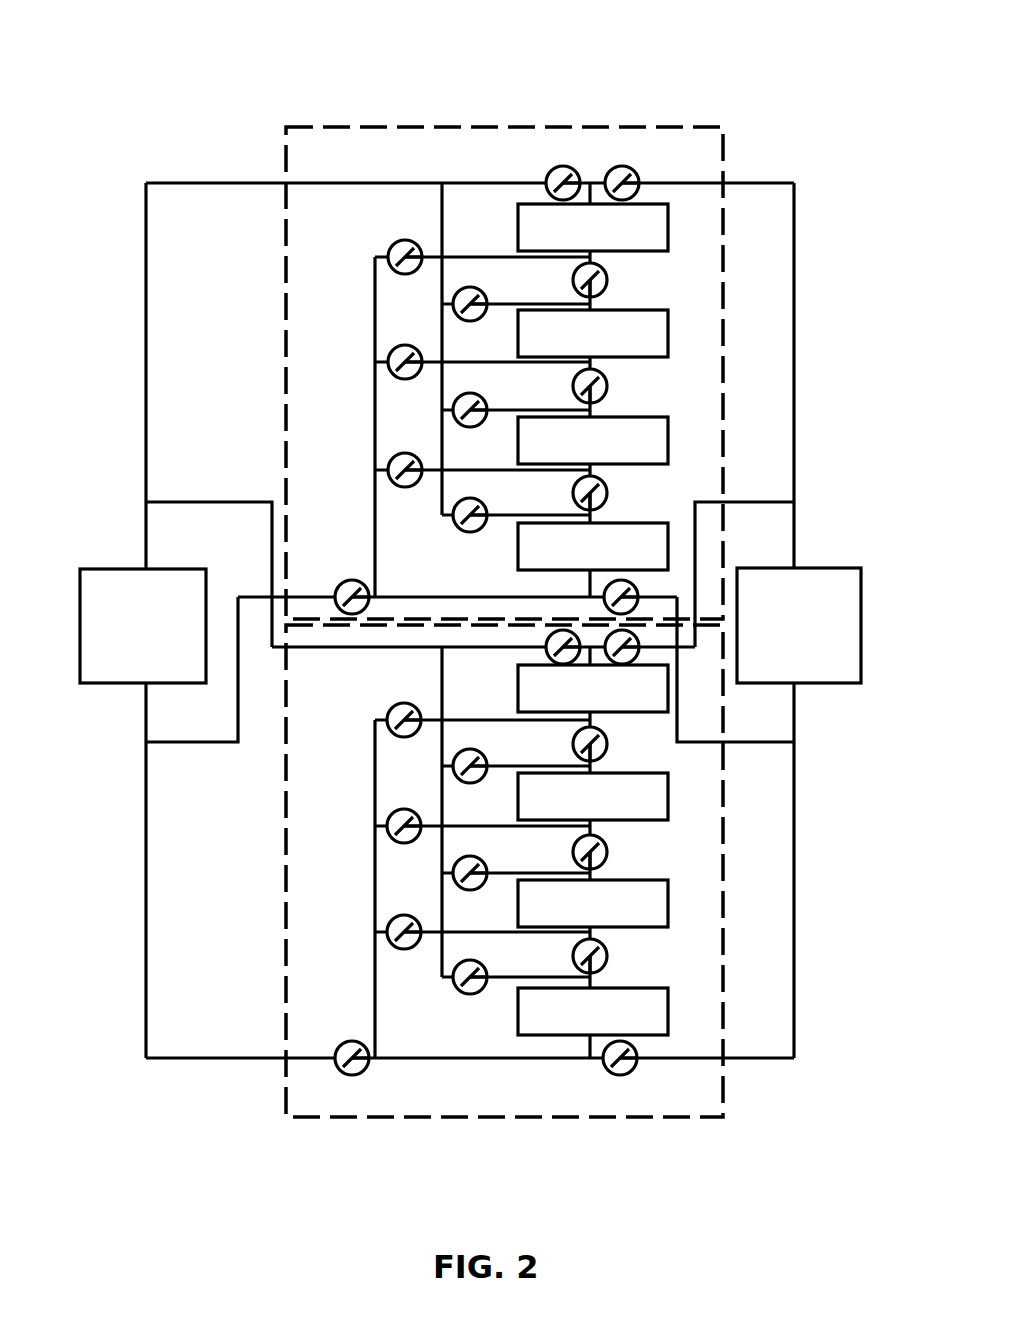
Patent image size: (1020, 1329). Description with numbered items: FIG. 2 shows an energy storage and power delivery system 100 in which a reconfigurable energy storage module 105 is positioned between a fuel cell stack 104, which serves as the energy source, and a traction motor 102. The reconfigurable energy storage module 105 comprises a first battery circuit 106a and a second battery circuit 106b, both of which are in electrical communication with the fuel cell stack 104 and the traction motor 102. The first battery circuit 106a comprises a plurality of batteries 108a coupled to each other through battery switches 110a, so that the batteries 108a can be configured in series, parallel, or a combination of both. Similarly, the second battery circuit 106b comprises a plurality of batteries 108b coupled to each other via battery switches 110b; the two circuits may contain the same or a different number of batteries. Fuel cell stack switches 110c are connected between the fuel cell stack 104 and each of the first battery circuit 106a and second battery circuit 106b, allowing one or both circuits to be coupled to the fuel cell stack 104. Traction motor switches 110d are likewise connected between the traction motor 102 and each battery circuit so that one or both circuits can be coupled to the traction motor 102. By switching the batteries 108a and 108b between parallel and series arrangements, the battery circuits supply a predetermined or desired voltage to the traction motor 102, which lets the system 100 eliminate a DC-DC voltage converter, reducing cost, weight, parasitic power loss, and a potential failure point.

The energy storage and power delivery system 100 is at (816, 45).
The traction motor 102 is at (799, 625).
The fuel cell stack 104 is at (143, 626).
The reconfigurable energy storage module 105 is at (503, 90).
The first battery circuit 106a is at (658, 127).
The second battery circuit 106b is at (655, 1117).
The batteries 108a is at (593, 390).
The batteries 108b is at (593, 852).
The battery switches 110a is at (398, 240).
The battery switches 110b is at (391, 920).
The fuel cell stack switches 110c is at (343, 583).
The traction motor switches 110d is at (637, 588).